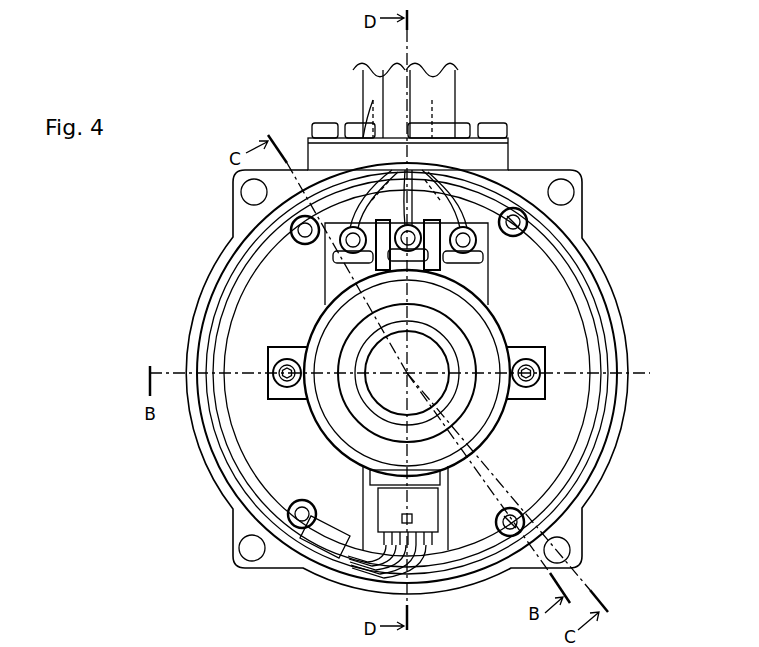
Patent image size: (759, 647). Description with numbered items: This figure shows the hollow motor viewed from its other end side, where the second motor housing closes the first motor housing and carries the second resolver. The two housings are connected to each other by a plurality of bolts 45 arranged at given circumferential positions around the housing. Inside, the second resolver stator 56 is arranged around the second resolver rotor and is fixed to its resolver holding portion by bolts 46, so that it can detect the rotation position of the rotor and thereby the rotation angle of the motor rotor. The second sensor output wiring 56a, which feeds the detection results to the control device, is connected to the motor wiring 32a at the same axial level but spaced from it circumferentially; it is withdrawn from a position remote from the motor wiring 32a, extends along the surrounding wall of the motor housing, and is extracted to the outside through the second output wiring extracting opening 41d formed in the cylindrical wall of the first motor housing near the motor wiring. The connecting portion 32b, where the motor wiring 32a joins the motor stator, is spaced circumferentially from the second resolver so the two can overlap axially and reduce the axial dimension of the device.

The motor wiring 32a is at (428, 152).
The connecting portion 32b is at (343, 250).
The second output wiring extracting opening 41d is at (365, 140).
The bolts 45 is at (516, 210).
The bolts 46 is at (278, 362).
The second resolver stator 56 is at (333, 420).
The second sensor output wiring 56a is at (223, 425).